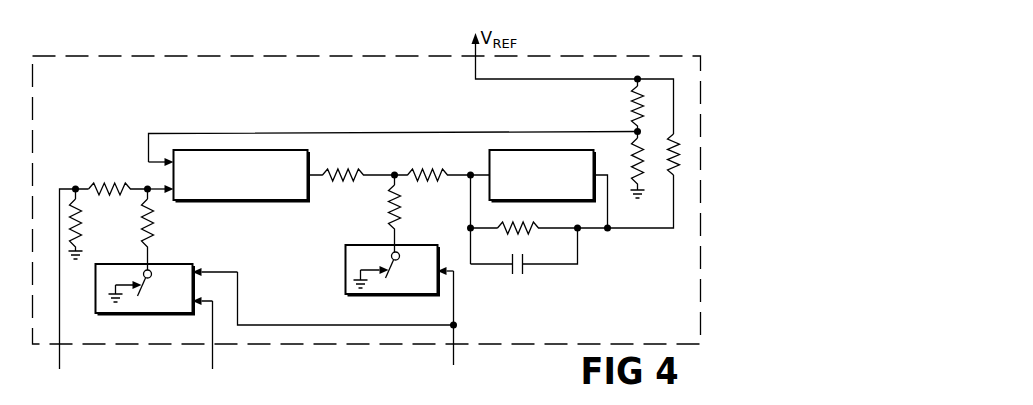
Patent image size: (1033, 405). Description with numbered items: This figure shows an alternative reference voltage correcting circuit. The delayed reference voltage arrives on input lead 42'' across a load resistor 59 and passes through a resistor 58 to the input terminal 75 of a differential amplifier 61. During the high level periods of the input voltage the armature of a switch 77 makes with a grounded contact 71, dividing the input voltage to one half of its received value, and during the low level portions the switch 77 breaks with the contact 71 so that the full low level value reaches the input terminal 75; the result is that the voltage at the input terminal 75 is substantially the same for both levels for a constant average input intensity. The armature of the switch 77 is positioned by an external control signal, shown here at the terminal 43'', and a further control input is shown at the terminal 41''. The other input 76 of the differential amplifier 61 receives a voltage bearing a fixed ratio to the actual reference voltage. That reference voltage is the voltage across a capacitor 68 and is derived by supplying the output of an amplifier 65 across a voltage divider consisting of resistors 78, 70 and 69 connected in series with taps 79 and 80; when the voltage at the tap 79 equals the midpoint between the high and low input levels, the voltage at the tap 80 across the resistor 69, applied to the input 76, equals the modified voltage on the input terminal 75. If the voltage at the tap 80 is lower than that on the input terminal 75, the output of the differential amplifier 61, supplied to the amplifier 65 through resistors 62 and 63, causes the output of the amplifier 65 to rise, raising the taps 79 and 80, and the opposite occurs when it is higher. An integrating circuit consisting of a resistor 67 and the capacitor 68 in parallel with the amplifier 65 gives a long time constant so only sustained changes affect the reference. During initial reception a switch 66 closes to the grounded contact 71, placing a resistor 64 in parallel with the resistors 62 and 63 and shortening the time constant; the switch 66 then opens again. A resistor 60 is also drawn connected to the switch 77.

The automatic speed regulator (ASR) input terminal 41'' is at (451, 324).
The input lead 42'' is at (71, 285).
The D input terminal 43'' is at (229, 339).
The resistor 58 is at (90, 185).
The load resistor 59 is at (82, 225).
The resistor to switch 60 is at (153, 236).
The differential amplifier 61 is at (289, 199).
The resistor 62 is at (342, 169).
The resistor 63 is at (428, 169).
The resistor 64 is at (400, 203).
The amplifier 65 is at (565, 199).
The switch 66 is at (419, 243).
The resistor 67 is at (515, 222).
The capacitor 68 is at (522, 266).
The resistor 69 is at (632, 158).
The resistor 70 is at (633, 101).
The contact 71 is at (136, 287).
The input terminal 75 is at (156, 189).
The input 76 is at (148, 139).
The switch 77 is at (180, 262).
The resistor 78 is at (676, 138).
The tap 79 is at (639, 77).
The tap 80 is at (634, 128).